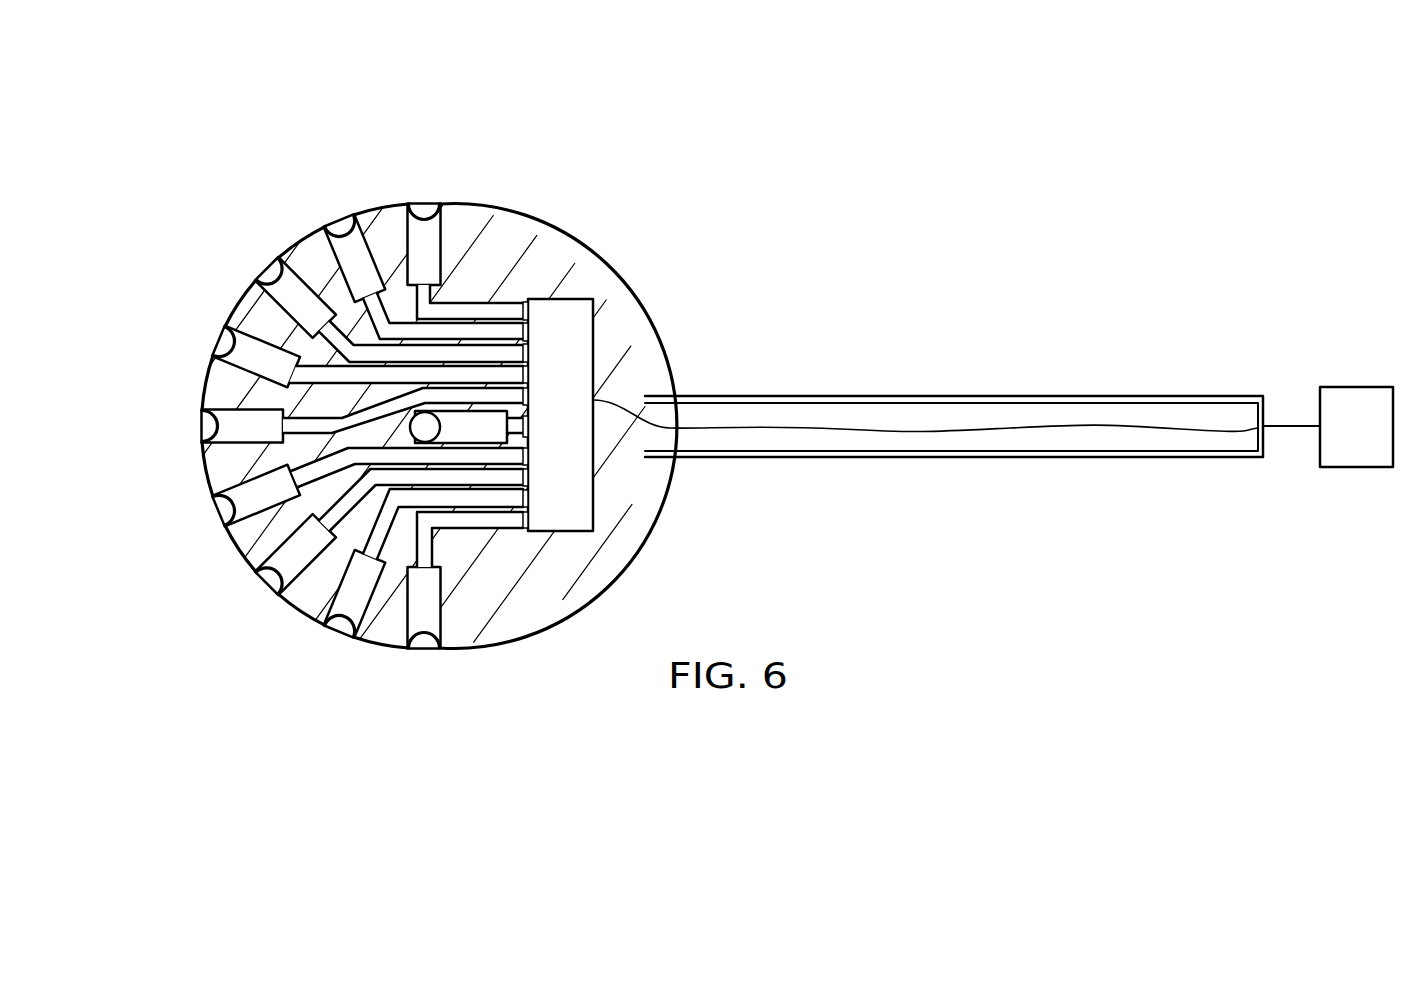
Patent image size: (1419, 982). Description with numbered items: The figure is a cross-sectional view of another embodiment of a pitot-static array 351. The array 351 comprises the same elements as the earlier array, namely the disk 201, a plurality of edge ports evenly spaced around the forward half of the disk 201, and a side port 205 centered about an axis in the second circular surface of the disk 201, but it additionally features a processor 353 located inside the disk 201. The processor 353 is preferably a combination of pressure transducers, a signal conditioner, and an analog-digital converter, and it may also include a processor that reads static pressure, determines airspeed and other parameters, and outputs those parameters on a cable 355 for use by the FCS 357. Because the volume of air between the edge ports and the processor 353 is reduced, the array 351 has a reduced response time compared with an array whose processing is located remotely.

The pitot-static array 351 is at (403, 399).
The disk 201 is at (520, 224).
The side port 205 is at (423, 421).
The processor 353 is at (593, 326).
The cable 355 is at (1040, 432).
The FCS 357 is at (1358, 387).